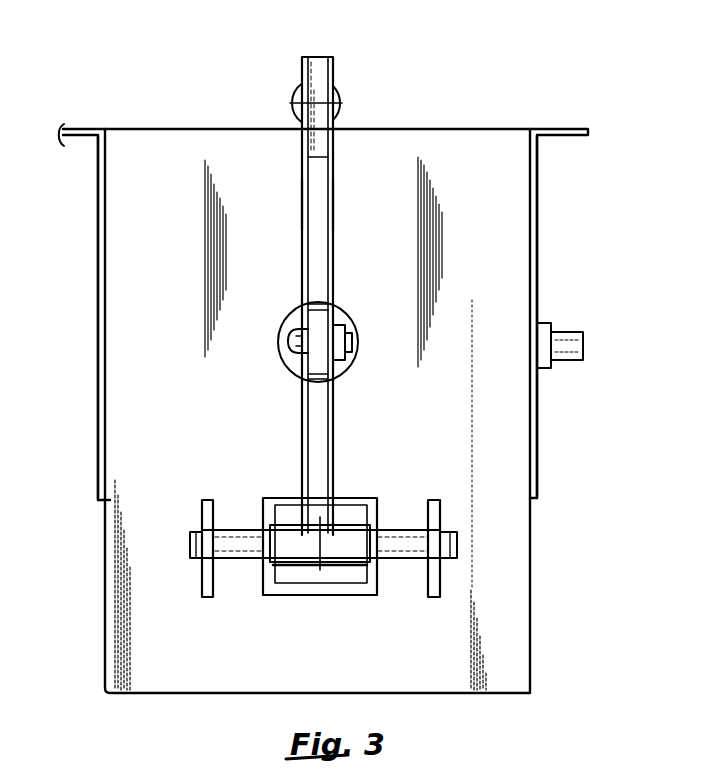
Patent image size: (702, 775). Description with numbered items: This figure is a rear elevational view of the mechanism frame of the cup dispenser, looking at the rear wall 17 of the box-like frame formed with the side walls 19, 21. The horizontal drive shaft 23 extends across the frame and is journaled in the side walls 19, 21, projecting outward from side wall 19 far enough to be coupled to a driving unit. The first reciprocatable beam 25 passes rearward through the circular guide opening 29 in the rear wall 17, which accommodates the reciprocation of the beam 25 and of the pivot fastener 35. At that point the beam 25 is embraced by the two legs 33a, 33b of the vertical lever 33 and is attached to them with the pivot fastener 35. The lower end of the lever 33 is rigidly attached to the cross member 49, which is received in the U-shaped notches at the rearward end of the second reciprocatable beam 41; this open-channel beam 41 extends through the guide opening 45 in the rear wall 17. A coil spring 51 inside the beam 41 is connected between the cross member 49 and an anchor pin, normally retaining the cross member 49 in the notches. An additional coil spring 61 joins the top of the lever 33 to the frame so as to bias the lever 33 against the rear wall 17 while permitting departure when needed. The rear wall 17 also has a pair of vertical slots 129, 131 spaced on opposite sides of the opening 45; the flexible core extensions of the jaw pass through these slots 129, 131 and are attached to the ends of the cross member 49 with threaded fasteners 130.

The rear wall 17 is at (497, 211).
The side wall 19 is at (99, 447).
The side wall 21 is at (540, 449).
The horizontal drive shaft 23 is at (570, 338).
The first reciprocatable beam 25 is at (317, 327).
The guide opening 29 is at (350, 330).
The vertical lever 33 is at (317, 58).
The leg of vertical lever 33a is at (302, 205).
The leg of vertical lever 33b is at (333, 204).
The pivot fastener 35 is at (292, 352).
The second reciprocatable beam 41 is at (323, 585).
The guide opening 45 is at (285, 597).
The cross member 49 is at (402, 549).
The coil spring 51 is at (323, 558).
The coil spring 61 is at (341, 102).
The vertical slot 129 is at (201, 583).
The threaded fastener 130 is at (188, 544).
The vertical slot 131 is at (441, 580).